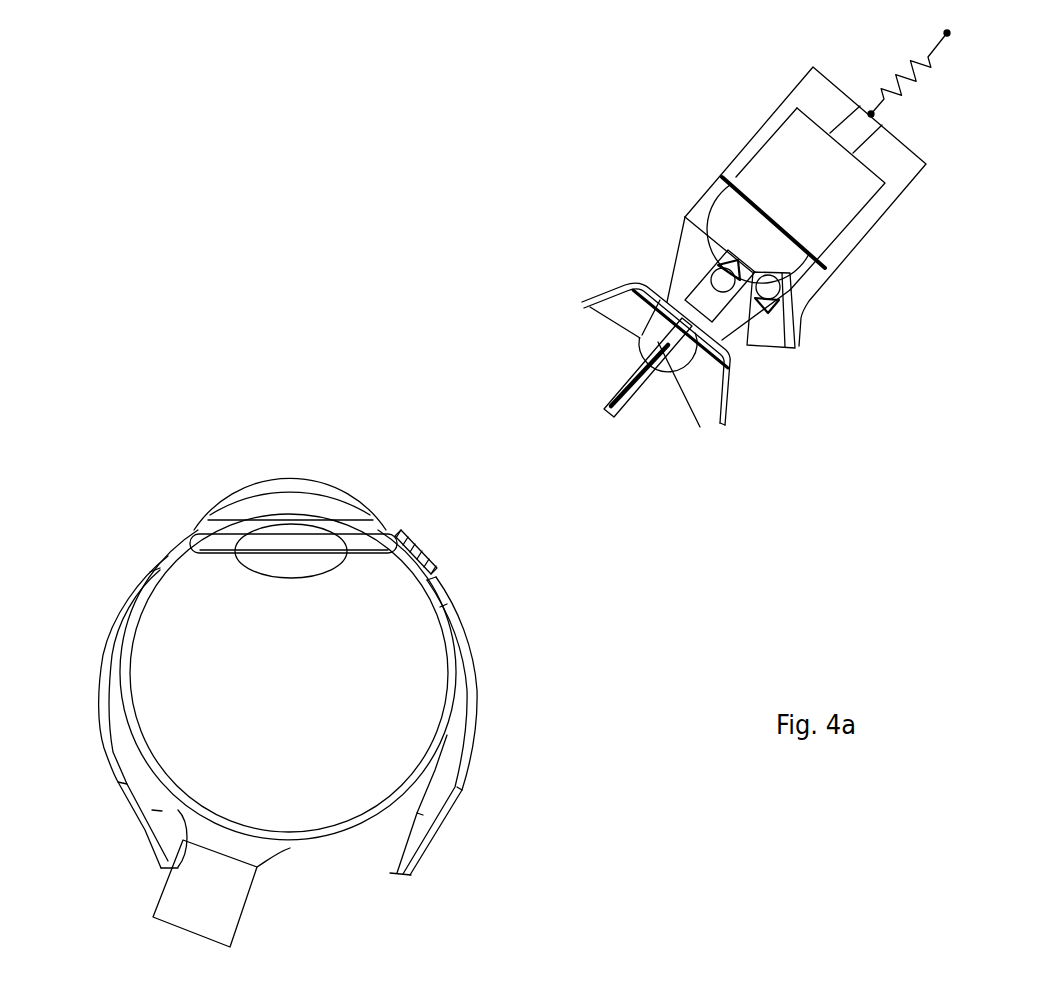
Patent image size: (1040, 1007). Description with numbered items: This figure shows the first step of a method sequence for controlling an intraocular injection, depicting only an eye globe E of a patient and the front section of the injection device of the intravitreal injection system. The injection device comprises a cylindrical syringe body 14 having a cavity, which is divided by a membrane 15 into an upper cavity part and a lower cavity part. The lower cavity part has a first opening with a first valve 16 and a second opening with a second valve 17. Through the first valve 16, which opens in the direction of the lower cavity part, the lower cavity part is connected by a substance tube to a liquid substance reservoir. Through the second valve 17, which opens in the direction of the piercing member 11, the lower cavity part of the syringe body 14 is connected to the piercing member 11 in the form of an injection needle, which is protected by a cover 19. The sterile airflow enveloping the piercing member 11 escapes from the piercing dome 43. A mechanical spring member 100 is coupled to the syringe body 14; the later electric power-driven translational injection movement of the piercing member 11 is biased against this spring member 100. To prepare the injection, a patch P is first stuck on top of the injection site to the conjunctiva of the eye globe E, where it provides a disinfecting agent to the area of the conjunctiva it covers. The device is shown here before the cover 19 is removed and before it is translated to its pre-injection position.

The mechanical spring member 100 is at (882, 101).
The cylindrical syringe body 14 is at (855, 228).
The membrane 15 is at (762, 217).
The first valve 16 is at (800, 328).
The second valve 17 is at (703, 307).
The piercing dome 43 is at (622, 315).
The cover 19 is at (602, 408).
The piercing member 11 is at (622, 393).
The patch P is at (433, 560).
The eye globe E is at (418, 687).